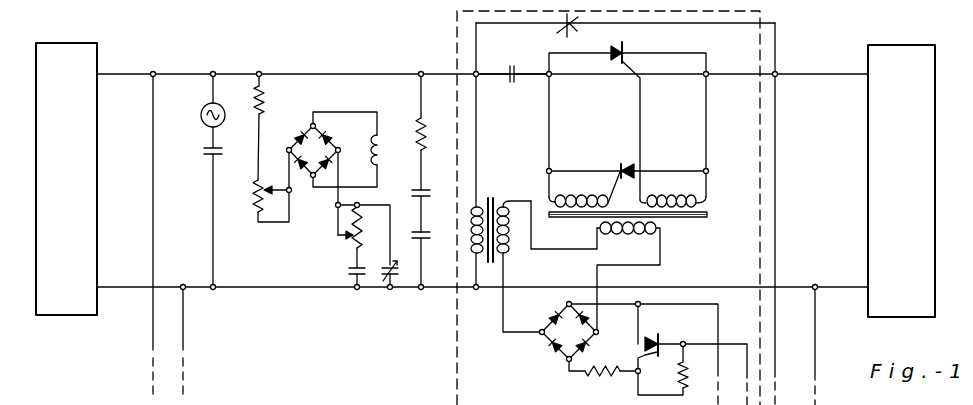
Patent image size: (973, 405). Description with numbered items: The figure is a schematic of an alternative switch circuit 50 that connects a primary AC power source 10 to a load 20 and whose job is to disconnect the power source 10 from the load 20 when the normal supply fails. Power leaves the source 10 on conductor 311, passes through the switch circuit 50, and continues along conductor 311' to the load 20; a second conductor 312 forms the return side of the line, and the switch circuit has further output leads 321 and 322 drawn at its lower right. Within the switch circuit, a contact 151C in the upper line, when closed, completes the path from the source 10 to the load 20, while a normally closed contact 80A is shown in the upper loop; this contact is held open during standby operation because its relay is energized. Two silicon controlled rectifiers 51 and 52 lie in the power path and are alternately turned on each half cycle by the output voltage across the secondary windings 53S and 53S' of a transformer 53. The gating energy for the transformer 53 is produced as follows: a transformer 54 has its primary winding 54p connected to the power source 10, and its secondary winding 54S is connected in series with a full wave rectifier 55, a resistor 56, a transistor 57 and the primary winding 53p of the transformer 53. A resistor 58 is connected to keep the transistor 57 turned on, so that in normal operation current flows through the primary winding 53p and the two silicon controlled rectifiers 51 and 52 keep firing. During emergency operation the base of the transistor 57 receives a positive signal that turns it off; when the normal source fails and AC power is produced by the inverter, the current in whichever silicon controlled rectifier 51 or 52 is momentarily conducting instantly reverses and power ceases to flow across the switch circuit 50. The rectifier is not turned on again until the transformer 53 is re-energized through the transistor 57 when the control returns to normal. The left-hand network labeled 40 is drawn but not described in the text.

The primary AC power source 10 is at (73, 43).
The load 20 is at (906, 45).
The control circuit 40 is at (315, 239).
The switch circuit 50 is at (762, 12).
The conductor 311 is at (131, 234).
The input line 312 is at (117, 288).
The conductor 311' is at (811, 214).
The output lead 321 is at (746, 346).
The output lead 322 is at (716, 373).
The contact 151C is at (512, 65).
The normally closed contact 80A is at (573, 27).
The silicon controlled rectifier 51 is at (619, 64).
The silicon controlled rectifier 52 is at (622, 168).
The transformer 53 is at (707, 215).
The secondary winding 53S is at (584, 175).
The secondary winding 53S' is at (673, 175).
The primary winding 53p is at (660, 238).
The transformer 54 is at (491, 198).
The secondary winding 54S is at (508, 256).
The primary winding 54p is at (471, 262).
The full wave rectifier 55 is at (548, 343).
The resistor 56 is at (592, 372).
The transistor 57 is at (660, 333).
The resistor 58 is at (678, 381).